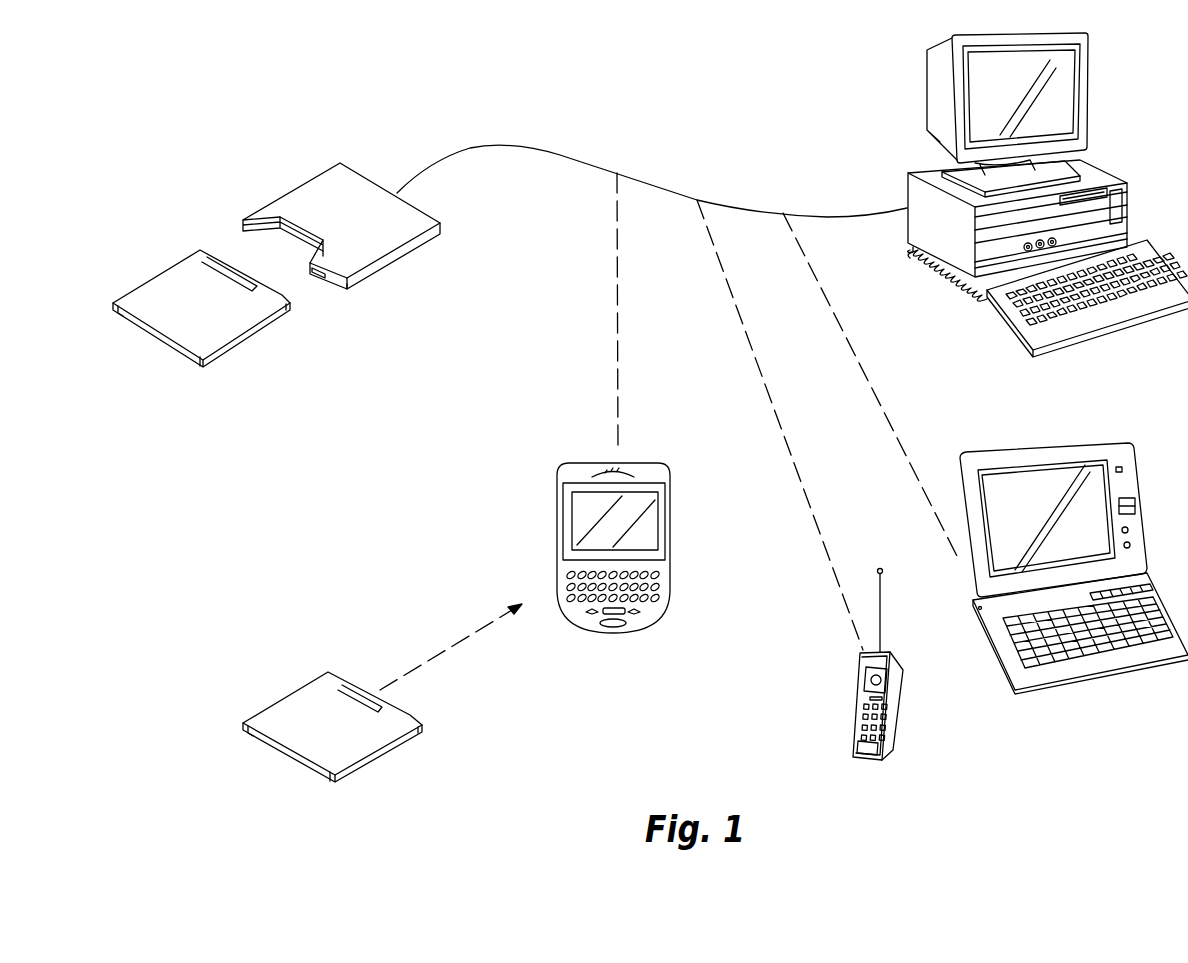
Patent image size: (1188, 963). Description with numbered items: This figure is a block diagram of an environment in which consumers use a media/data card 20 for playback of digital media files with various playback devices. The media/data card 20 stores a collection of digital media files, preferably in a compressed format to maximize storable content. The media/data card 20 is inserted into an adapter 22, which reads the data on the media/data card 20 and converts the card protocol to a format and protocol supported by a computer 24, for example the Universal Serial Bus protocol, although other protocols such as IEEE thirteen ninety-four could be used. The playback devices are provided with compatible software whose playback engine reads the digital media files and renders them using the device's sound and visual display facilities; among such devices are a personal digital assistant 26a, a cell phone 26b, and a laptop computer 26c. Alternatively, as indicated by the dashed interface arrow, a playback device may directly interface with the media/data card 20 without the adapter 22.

The media/data card 20 is at (168, 268).
The adapter 22 is at (300, 185).
The computer 24 is at (1125, 197).
The personal digital assistant (PDA) 26a is at (613, 634).
The cell phone 26b is at (860, 710).
The laptop computer 26c is at (1092, 675).